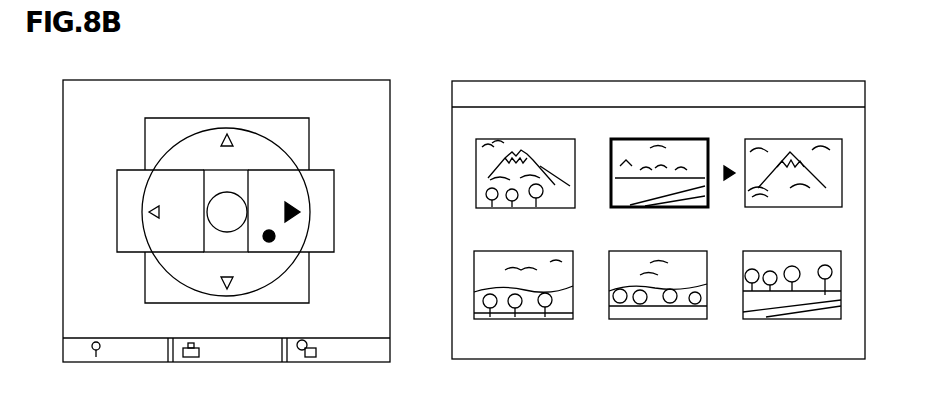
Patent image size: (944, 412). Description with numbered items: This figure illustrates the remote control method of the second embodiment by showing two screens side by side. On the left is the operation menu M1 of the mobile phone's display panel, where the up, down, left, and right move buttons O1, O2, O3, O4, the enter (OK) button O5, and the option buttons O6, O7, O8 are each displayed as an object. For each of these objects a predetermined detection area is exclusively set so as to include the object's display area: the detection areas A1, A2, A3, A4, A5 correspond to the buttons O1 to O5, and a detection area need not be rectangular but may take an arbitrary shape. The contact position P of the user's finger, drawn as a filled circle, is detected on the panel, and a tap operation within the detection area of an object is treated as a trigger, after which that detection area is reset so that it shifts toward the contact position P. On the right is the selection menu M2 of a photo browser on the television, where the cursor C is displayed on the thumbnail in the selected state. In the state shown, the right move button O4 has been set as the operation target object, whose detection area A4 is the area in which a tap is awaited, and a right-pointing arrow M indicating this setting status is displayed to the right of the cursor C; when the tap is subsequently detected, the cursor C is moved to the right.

The operation menu M1 is at (343, 80).
The selection menu M2 is at (787, 81).
The up move button O1 is at (175, 143).
The down move button O2 is at (185, 288).
The left move button O3 is at (143, 193).
The right move button O4 is at (310, 193).
The enter (OK) button O5 is at (226, 192).
The option button O6 is at (117, 363).
The option button O7 is at (219, 363).
The option button O8 is at (352, 363).
The detection area A1 is at (197, 118).
The detection area A2 is at (265, 304).
The detection area A3 is at (118, 232).
The detection area A4 is at (334, 232).
The detection area A5 is at (248, 176).
The contact position P is at (272, 240).
The cursor C is at (607, 150).
The right-pointing arrow M is at (728, 168).